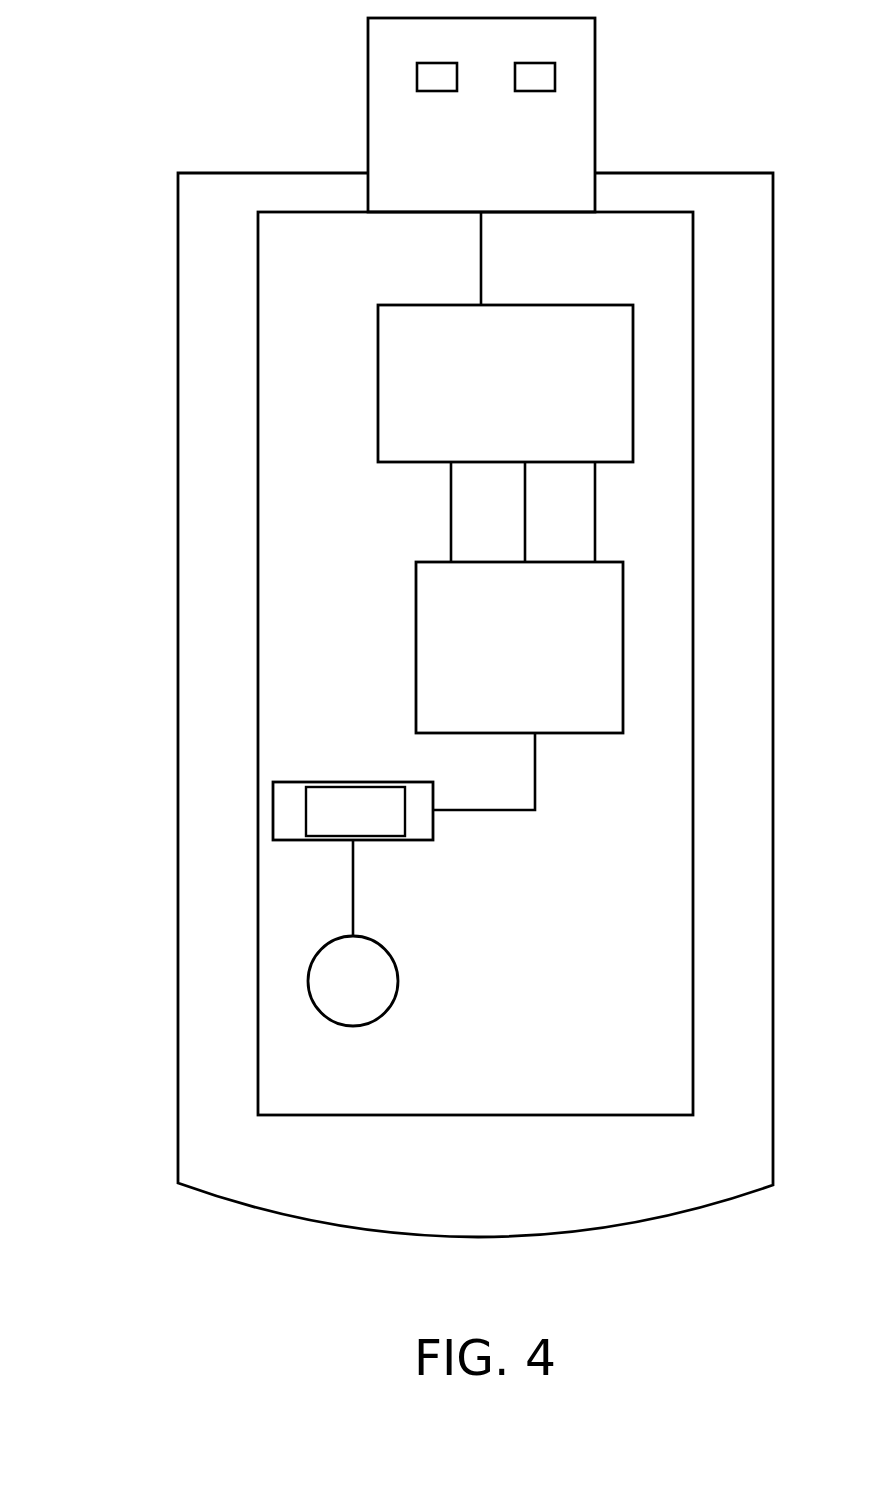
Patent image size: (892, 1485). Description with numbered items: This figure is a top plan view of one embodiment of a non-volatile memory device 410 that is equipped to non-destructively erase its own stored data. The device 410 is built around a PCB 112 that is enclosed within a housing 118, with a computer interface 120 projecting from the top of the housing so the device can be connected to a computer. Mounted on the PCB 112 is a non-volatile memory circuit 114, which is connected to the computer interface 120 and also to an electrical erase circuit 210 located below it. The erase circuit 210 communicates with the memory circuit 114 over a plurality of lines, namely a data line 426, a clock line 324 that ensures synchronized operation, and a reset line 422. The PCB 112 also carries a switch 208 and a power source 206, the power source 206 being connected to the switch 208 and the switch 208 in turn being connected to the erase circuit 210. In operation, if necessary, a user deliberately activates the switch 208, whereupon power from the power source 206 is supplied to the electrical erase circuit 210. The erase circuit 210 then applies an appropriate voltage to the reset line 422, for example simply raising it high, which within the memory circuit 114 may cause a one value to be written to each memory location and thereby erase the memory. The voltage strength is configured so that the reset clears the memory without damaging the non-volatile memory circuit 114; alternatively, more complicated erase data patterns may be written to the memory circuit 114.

The non-volatile memory device 410 is at (196, 107).
The housing 118 is at (178, 473).
The PCB 112 is at (258, 270).
The computer interface 120 is at (459, 149).
The non-volatile memory circuit 114 is at (483, 394).
The data line 426 is at (451, 501).
The clock line 324 is at (525, 505).
The reset line 422 is at (595, 507).
The electrical erase circuit 210 is at (498, 657).
The switch 208 is at (352, 782).
The power source 206 is at (331, 992).